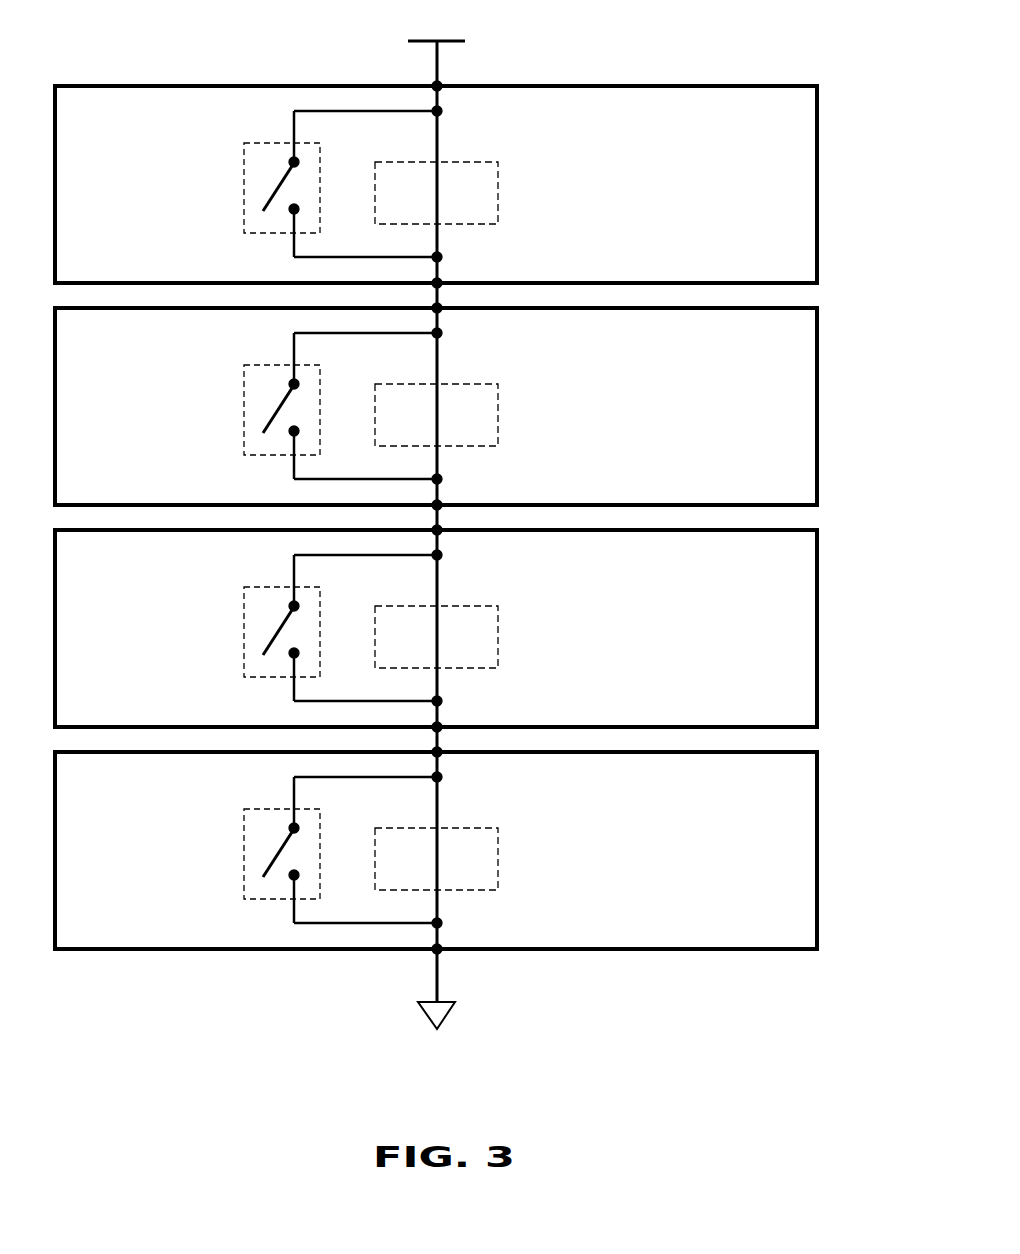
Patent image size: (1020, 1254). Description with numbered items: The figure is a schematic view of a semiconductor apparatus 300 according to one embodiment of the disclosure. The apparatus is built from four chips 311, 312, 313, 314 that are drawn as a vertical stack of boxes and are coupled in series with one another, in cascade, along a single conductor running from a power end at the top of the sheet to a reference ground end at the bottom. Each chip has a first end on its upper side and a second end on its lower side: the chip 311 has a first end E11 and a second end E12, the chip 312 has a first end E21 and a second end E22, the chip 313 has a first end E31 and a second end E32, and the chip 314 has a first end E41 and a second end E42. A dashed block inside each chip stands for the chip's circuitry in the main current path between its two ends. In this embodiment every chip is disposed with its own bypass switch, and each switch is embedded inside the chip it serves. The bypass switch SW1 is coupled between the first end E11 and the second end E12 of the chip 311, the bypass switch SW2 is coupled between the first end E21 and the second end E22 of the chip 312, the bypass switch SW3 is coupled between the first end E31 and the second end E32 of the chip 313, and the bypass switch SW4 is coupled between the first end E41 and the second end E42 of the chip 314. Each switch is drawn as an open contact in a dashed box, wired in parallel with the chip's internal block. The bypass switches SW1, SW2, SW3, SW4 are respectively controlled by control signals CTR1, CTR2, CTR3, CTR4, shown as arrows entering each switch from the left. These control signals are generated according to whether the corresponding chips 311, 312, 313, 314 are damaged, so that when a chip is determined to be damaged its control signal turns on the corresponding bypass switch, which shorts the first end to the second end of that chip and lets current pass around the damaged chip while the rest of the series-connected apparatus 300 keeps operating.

The semiconductor apparatus 300 is at (471, 544).
The chip 311 is at (471, 184).
The chip 312 is at (471, 406).
The chip 313 is at (471, 628).
The chip 314 is at (471, 850).
The bypass switch SW1 is at (268, 140).
The bypass switch SW2 is at (268, 362).
The bypass switch SW3 is at (268, 584).
The bypass switch SW4 is at (268, 806).
The control signal CTR1 is at (241, 185).
The control signal CTR2 is at (241, 407).
The control signal CTR3 is at (241, 629).
The control signal CTR4 is at (241, 851).
The first end E11 is at (440, 88).
The second end E12 is at (440, 281).
The first end E21 is at (440, 310).
The second end E22 is at (440, 503).
The first end E31 is at (440, 532).
The second end E32 is at (440, 725).
The first end E41 is at (440, 754).
The second end E42 is at (440, 947).